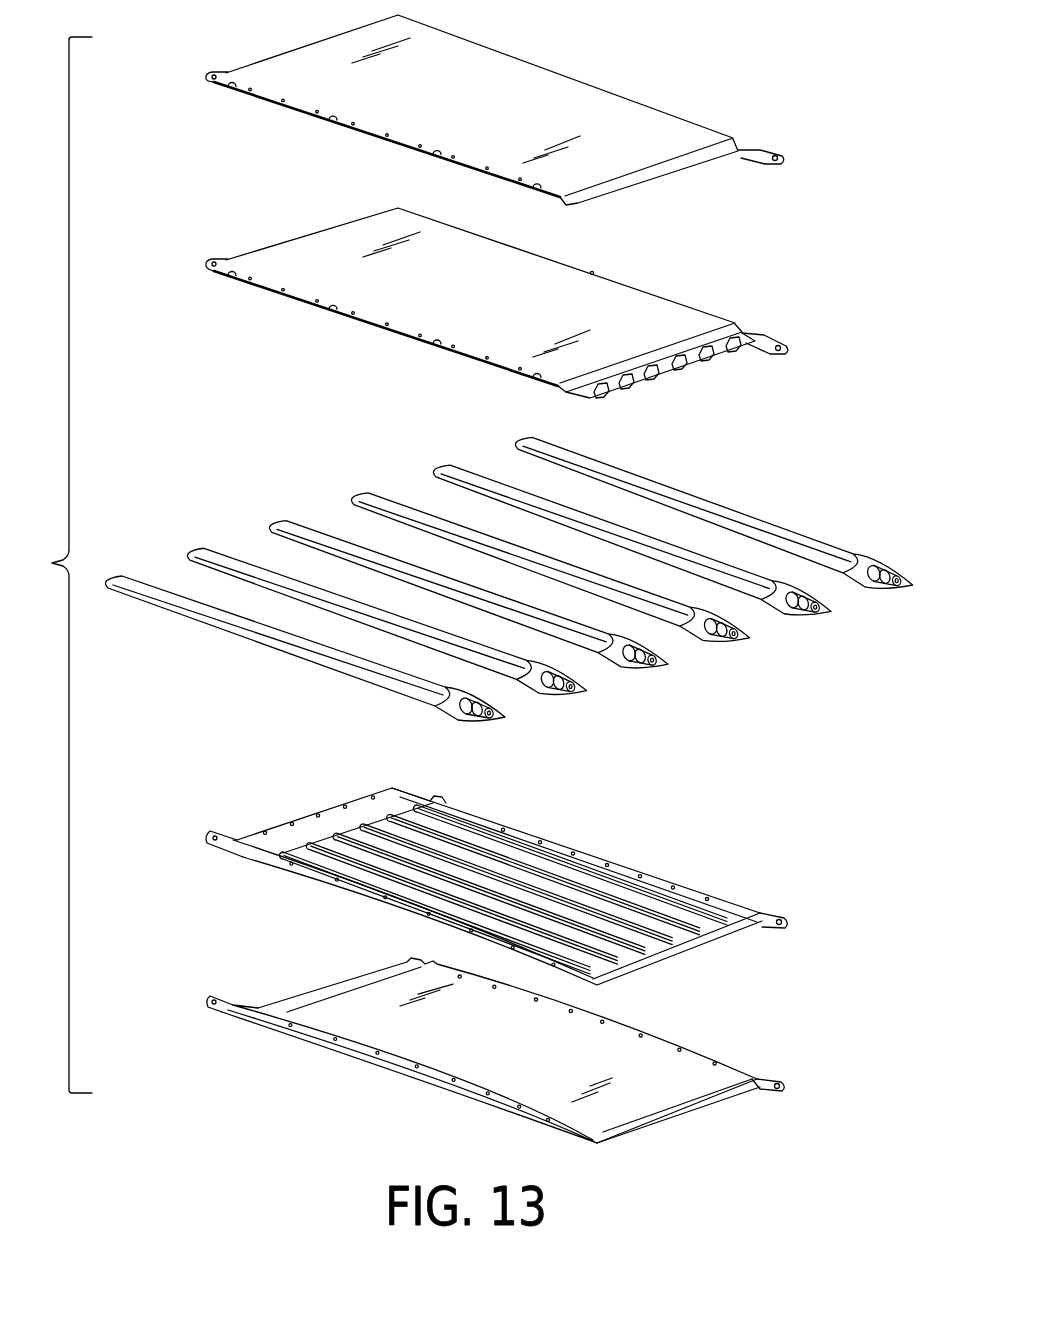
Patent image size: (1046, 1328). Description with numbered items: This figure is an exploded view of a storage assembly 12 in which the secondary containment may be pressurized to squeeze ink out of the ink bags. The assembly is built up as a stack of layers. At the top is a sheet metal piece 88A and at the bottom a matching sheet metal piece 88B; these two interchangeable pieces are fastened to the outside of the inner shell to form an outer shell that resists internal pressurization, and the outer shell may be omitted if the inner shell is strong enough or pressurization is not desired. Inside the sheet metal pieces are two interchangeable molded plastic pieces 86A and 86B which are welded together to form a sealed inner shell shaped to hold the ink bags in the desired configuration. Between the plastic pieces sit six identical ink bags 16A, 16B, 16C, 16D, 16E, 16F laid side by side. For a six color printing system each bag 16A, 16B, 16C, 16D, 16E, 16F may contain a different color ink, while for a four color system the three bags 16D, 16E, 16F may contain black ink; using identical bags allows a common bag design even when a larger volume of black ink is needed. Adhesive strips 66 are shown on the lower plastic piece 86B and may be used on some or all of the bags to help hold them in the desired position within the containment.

The storage assembly 12 is at (58, 565).
The sheet metal piece 88A is at (673, 138).
The molded plastic piece 86A is at (673, 323).
The ink bag 16A is at (474, 724).
The ink bag 16B is at (556, 697).
The ink bag 16C is at (637, 670).
The ink bag 16D is at (718, 644).
The ink bag 16E is at (801, 617).
The ink bag 16F is at (822, 552).
The adhesive strips 66 is at (588, 858).
The molded plastic piece 86B is at (508, 886).
The sheet metal piece 88B is at (719, 1075).